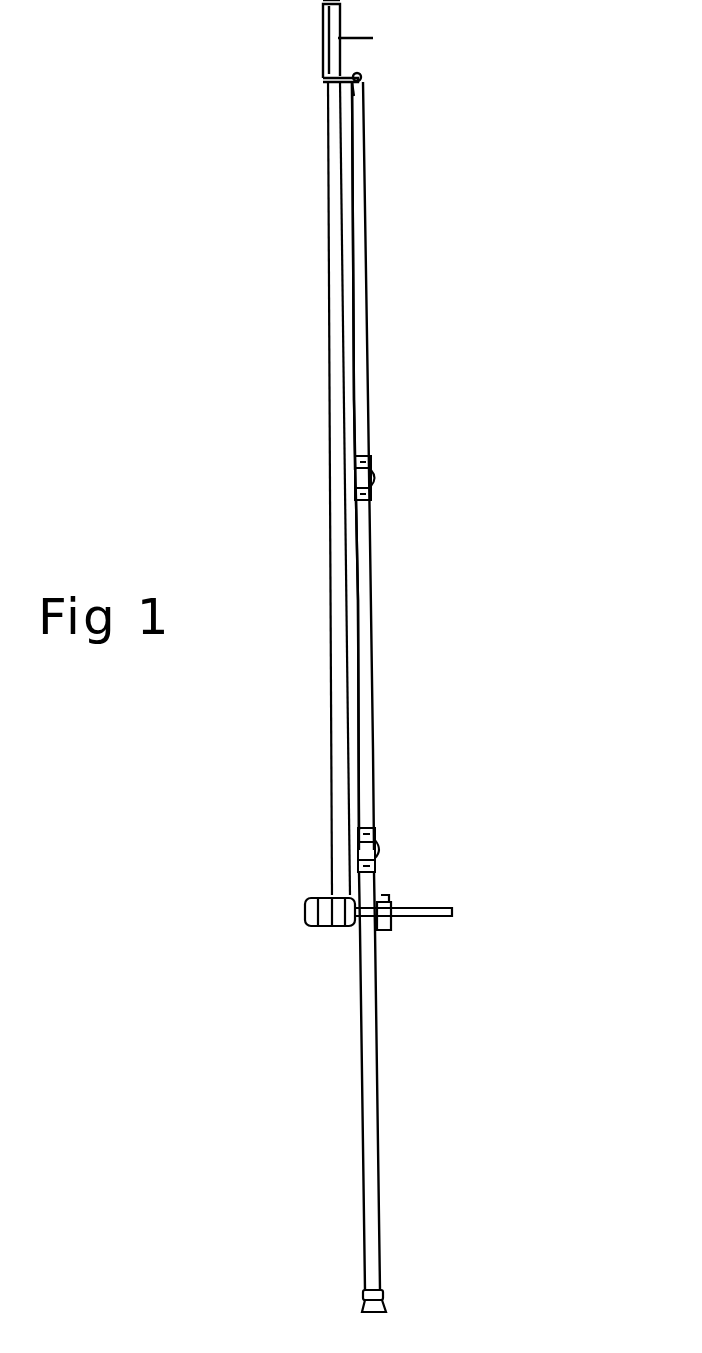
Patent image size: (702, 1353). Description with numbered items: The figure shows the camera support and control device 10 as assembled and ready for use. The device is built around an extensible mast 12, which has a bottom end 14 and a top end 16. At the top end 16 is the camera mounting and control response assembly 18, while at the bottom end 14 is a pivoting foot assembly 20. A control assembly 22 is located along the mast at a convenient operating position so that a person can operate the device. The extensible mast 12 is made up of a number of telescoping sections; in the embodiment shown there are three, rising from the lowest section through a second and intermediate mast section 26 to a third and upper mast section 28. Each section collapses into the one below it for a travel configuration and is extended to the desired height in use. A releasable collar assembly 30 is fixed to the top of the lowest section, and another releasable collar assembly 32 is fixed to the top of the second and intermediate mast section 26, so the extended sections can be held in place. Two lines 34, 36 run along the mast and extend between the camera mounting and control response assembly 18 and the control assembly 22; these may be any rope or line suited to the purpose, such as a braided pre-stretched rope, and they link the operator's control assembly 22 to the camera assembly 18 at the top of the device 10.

The camera support and control device 10 is at (462, 322).
The extensible mast 12 is at (373, 640).
The bottom end 14 is at (378, 1086).
The top end 16 is at (366, 93).
The camera mounting and control response assembly 18 is at (428, 88).
The pivoting foot assembly 20 is at (335, 1306).
The control assembly 22 is at (436, 906).
The second and intermediate mast section 26 is at (372, 578).
The third and upper mast section 28 is at (366, 290).
The releasable collar assembly 30 is at (381, 850).
The releasable collar assembly 32 is at (377, 478).
The line 34 is at (330, 705).
The line 36 is at (348, 748).